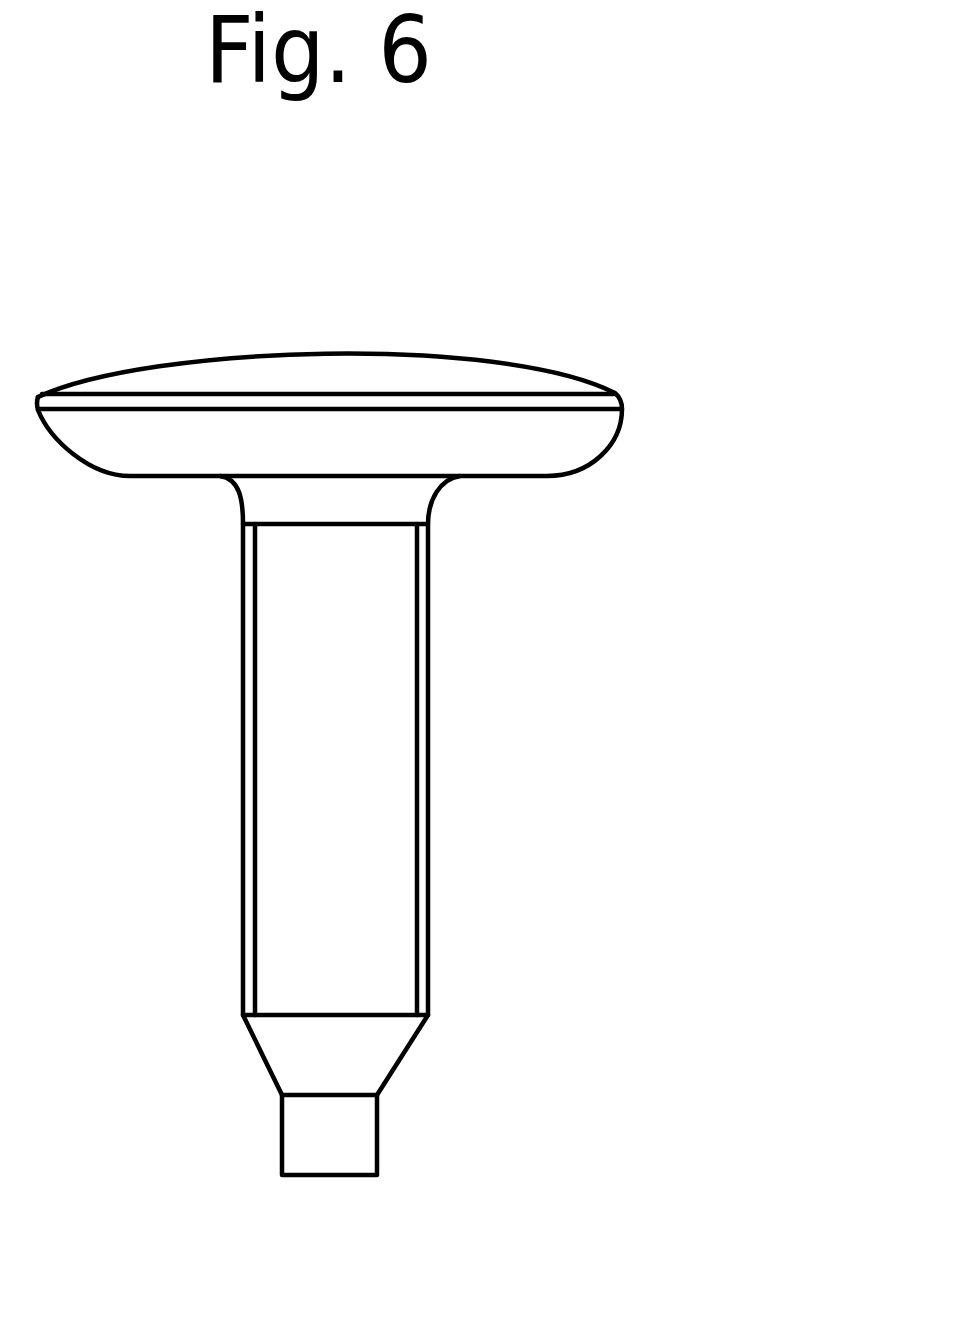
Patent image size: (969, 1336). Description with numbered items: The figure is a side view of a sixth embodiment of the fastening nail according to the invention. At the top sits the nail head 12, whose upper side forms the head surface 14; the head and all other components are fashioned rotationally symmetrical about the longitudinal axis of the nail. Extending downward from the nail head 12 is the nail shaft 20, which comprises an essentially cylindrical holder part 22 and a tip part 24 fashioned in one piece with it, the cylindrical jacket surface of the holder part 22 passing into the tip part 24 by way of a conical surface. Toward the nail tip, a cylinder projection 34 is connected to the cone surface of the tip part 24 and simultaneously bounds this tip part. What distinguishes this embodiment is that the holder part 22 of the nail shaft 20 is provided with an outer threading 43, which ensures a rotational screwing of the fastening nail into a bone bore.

The nail head 12 is at (672, 413).
The head surface 14 is at (476, 356).
The nail shaft 20 is at (554, 784).
The holder part 22 is at (387, 952).
The tip part 24 is at (571, 1075).
The cylinder projection 34 is at (353, 1128).
The outer threading 43 is at (417, 645).